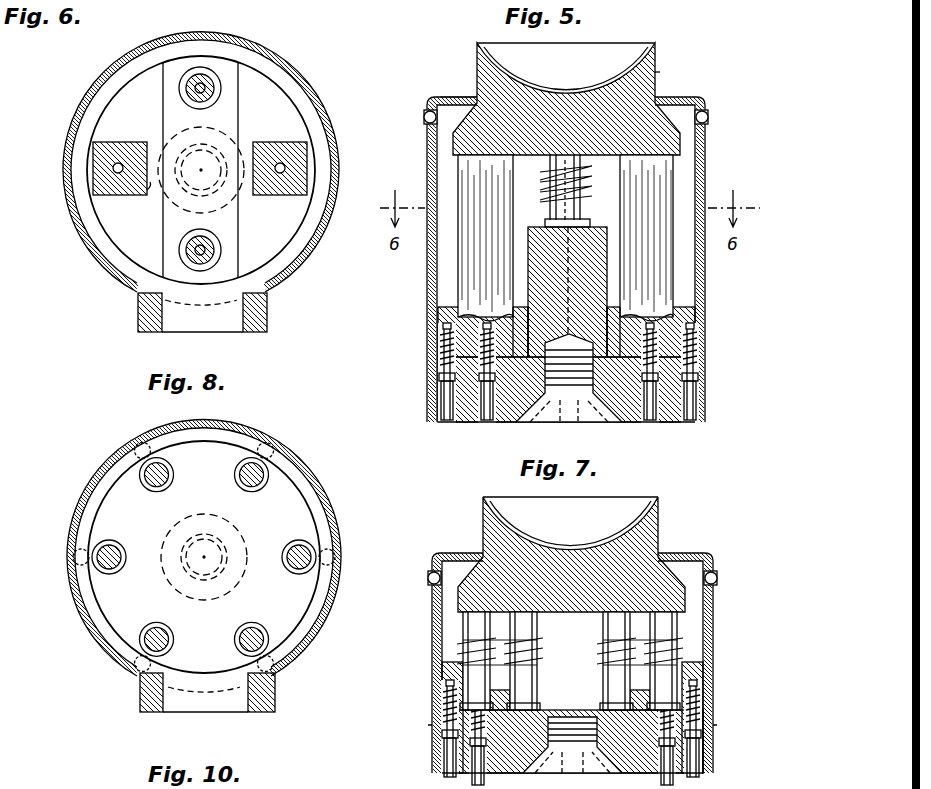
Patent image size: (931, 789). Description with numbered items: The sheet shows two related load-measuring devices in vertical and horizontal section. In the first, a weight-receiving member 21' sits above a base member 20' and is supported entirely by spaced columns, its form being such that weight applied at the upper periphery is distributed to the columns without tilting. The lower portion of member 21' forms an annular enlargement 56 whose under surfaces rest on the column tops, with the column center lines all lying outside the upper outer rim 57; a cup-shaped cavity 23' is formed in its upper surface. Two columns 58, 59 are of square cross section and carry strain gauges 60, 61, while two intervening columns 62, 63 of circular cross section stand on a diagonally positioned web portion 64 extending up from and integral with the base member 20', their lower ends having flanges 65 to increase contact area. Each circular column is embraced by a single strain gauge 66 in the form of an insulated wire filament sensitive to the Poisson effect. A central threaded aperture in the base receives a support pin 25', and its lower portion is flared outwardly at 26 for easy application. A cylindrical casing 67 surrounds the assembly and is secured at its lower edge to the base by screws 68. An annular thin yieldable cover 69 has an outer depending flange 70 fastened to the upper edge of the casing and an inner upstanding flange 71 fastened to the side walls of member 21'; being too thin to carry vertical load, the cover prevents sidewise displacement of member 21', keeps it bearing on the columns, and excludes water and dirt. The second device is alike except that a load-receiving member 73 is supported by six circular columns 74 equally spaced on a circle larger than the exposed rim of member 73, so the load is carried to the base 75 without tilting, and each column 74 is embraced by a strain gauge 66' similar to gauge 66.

In FIG. 6, the base member 20' is at (180, 194).
In FIG. 5, the base member 20' is at (539, 364).
In FIG. 5, the weight-receiving member 21' is at (456, 69).
In FIG. 5, the concave seat 23' is at (493, 32).
In FIG. 5, the bottom opening 25' is at (545, 425).
In FIG. 5, the flared lower portion of threaded aperture 26 is at (560, 424).
In FIG. 5, the annular enlargement 56 is at (680, 142).
In FIG. 5, the upper outer rim 57 is at (648, 46).
In FIG. 6, the column of square cross section 58 is at (266, 150).
In FIG. 6, the column of square cross section 59 is at (110, 146).
In FIG. 6, the strain gauge 60 is at (312, 160).
In FIG. 5, the strain gauge 60 is at (456, 262).
In FIG. 6, the strain gauge 61 is at (150, 192).
In FIG. 5, the strain gauge 61 is at (517, 268).
In FIG. 6, the column of circular cross section 62 is at (214, 242).
In FIG. 6, the column of circular cross section 63 is at (214, 106).
In FIG. 5, the column of circular cross section 63 is at (581, 162).
In FIG. 6, the web portion 64 is at (172, 116).
In FIG. 5, the web portion 64 is at (532, 240).
In FIG. 5, the flange 65 is at (590, 222).
In FIG. 5, the strain gauge 66 is at (554, 184).
In FIG. 7, the strain gauge 66' is at (570, 664).
In FIG. 6, the cylindrical casing 67 is at (98, 84).
In FIG. 5, the cylindrical casing 67 is at (703, 178).
In FIG. 5, the screw 68 is at (698, 348).
In FIG. 5, the annular thin yieldable cover 69 is at (690, 100).
In FIG. 5, the outer depending flange 70 is at (708, 116).
In FIG. 5, the inner upstanding flange 71 is at (657, 74).
In FIG. 7, the load-receiving member 73 is at (486, 522).
In FIG. 8, the column 74 is at (145, 478).
In FIG. 7, the column 74 is at (463, 624).
In FIG. 7, the base 75 is at (434, 728).